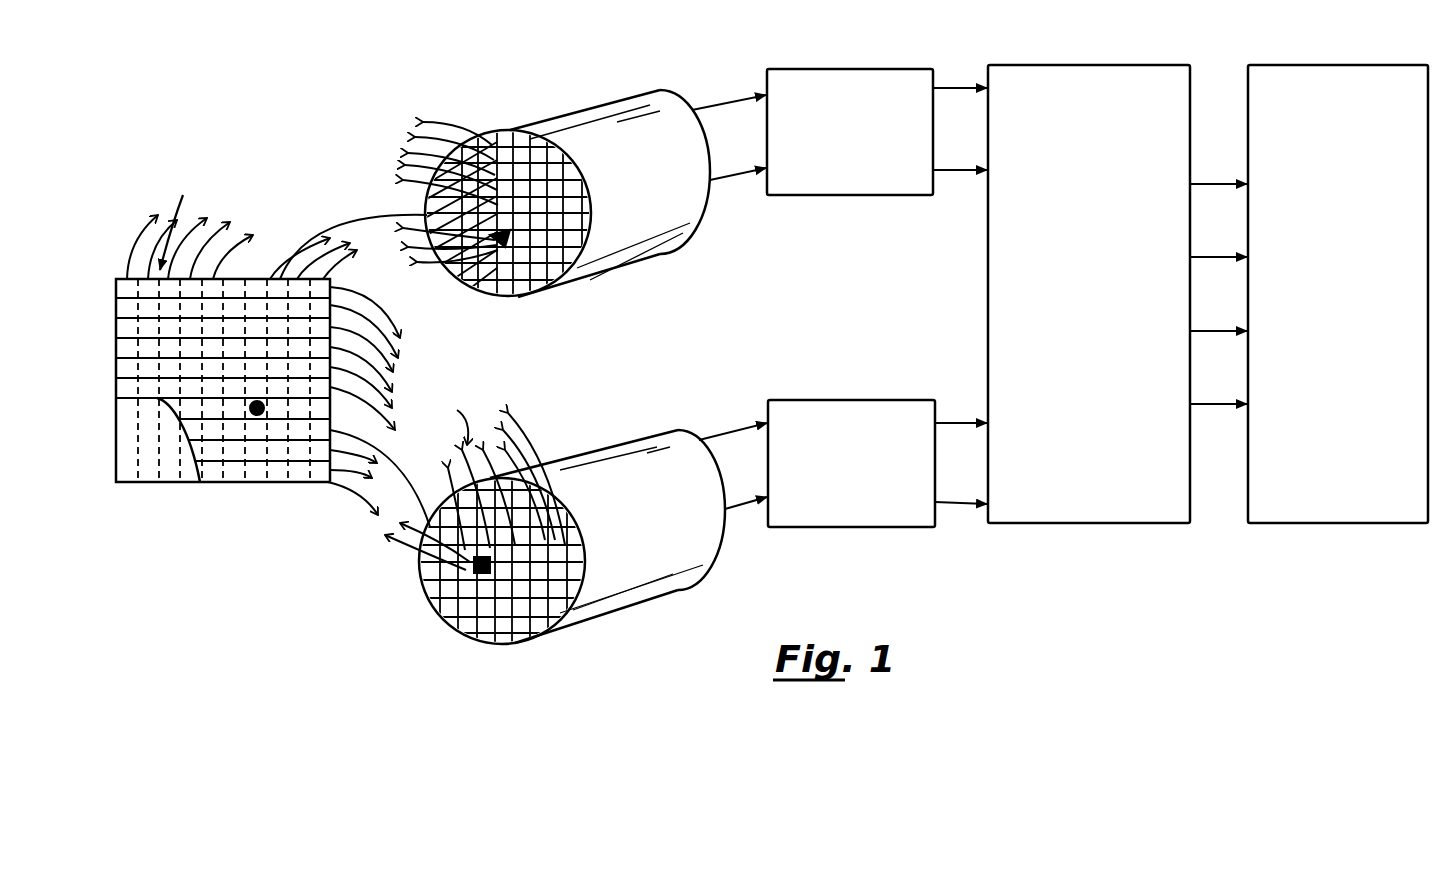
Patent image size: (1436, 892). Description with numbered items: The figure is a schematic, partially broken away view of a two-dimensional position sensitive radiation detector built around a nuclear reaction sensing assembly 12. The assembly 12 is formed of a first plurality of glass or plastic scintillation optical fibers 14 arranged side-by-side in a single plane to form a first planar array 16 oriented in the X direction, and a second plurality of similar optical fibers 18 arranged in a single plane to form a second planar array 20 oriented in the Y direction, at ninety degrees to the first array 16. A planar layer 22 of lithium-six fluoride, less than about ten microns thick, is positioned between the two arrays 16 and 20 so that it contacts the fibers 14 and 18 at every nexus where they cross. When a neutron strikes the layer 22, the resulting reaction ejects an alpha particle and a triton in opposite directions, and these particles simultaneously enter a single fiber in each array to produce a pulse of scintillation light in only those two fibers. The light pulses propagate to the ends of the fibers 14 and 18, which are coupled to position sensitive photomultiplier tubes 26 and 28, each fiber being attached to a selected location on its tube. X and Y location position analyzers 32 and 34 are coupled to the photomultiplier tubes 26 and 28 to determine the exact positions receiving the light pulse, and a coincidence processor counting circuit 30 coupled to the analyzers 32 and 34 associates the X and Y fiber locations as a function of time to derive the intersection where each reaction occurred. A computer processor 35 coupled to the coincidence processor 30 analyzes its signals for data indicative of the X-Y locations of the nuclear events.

The nuclear reaction sensing assembly 12 is at (126, 240).
The scintillation optical fibers 14 is at (262, 279).
The first planar array 16 is at (188, 222).
The optical fibers 18 is at (392, 418).
The second planar array 20 is at (338, 348).
The planar layer 22 is at (148, 455).
The photomultiplier tube 26 is at (572, 143).
The photomultiplier tube 28 is at (625, 568).
The coincidence processor counting circuit 30 is at (1053, 63).
The X location position analyzer 32 is at (822, 69).
The Y location position analyzer 34 is at (840, 527).
The computer processor 35 is at (1298, 63).